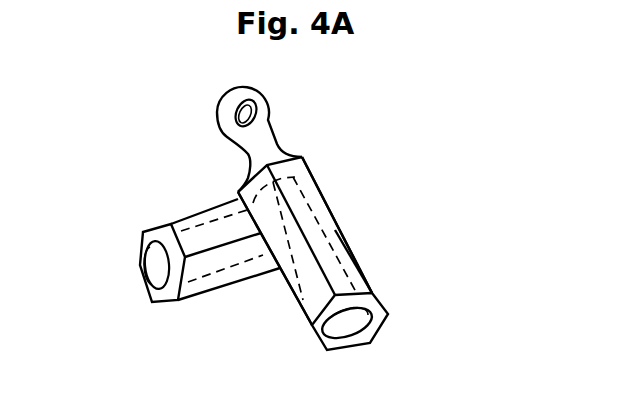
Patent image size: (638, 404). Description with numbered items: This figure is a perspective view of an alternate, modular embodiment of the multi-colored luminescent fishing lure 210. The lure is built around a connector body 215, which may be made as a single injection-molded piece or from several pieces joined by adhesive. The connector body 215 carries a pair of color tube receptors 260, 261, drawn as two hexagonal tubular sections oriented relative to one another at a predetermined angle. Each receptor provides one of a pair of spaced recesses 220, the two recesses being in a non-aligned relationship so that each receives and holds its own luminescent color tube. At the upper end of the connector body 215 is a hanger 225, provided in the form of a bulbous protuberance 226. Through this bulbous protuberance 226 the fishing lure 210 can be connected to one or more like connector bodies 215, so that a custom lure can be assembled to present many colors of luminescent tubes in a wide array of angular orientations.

The multi-colored luminescent fishing lure 210 is at (363, 175).
The connector body 215 is at (372, 250).
The recesses 220 is at (152, 271).
The hanger 225 is at (290, 144).
The bulbous protuberance 226 is at (250, 110).
The color tube receptor 260 is at (198, 217).
The color tube receptor 261 is at (365, 278).